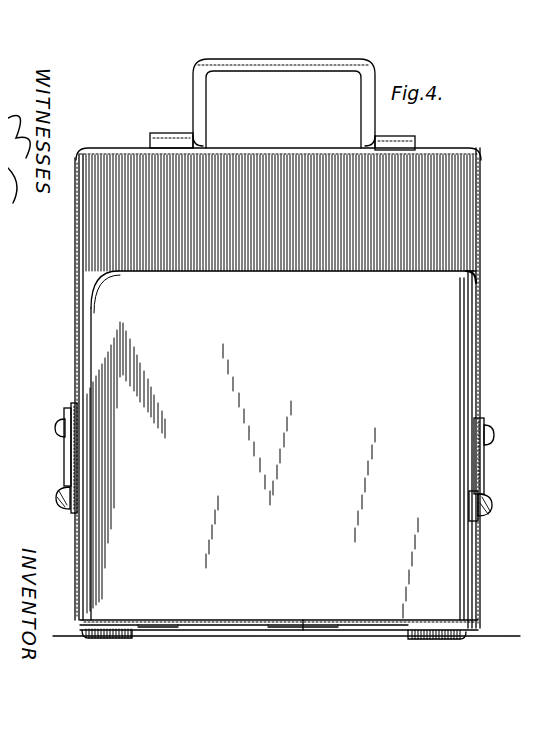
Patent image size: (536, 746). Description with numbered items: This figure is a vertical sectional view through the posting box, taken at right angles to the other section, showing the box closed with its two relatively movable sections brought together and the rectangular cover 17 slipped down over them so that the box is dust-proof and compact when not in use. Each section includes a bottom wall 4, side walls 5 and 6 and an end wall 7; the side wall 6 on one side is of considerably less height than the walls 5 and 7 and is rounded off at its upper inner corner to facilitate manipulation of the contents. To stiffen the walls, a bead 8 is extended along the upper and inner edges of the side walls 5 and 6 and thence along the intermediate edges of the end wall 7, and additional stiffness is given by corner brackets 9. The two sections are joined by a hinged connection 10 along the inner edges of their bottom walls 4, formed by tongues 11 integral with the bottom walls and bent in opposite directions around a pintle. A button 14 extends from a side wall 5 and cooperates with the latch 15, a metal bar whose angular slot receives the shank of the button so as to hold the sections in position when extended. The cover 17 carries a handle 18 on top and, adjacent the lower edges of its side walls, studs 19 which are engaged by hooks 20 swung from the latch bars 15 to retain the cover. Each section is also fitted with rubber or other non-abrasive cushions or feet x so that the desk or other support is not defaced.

The bottom wall 4 is at (333, 612).
The side wall 5 is at (458, 381).
The side wall 6 is at (72, 535).
The end wall 7 is at (440, 312).
The bead 8 is at (337, 265).
The corner bracket 9 is at (458, 348).
The hinged connection 10 is at (258, 624).
The tongue 11 is at (295, 622).
The button 14 is at (48, 490).
The latch 15 is at (468, 512).
The cover 17 is at (283, 140).
The handle 18 is at (310, 60).
The stud 19 is at (49, 424).
The hook 20 is at (56, 452).
The cushion or foot x is at (107, 630).